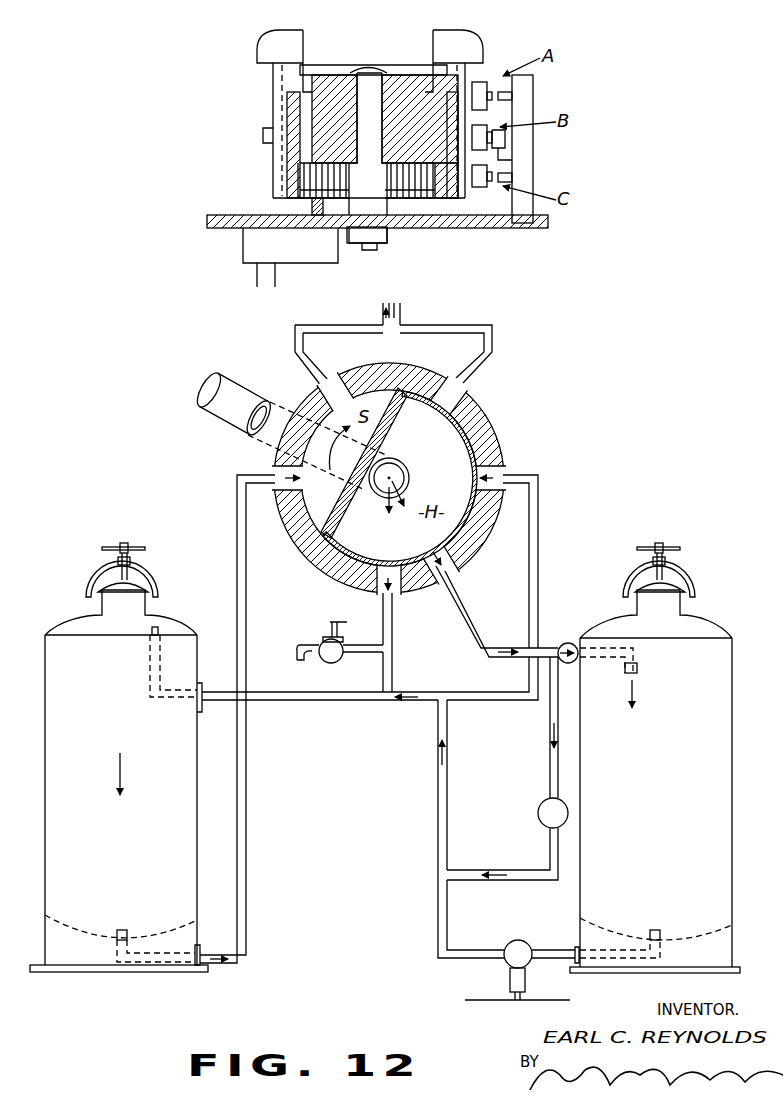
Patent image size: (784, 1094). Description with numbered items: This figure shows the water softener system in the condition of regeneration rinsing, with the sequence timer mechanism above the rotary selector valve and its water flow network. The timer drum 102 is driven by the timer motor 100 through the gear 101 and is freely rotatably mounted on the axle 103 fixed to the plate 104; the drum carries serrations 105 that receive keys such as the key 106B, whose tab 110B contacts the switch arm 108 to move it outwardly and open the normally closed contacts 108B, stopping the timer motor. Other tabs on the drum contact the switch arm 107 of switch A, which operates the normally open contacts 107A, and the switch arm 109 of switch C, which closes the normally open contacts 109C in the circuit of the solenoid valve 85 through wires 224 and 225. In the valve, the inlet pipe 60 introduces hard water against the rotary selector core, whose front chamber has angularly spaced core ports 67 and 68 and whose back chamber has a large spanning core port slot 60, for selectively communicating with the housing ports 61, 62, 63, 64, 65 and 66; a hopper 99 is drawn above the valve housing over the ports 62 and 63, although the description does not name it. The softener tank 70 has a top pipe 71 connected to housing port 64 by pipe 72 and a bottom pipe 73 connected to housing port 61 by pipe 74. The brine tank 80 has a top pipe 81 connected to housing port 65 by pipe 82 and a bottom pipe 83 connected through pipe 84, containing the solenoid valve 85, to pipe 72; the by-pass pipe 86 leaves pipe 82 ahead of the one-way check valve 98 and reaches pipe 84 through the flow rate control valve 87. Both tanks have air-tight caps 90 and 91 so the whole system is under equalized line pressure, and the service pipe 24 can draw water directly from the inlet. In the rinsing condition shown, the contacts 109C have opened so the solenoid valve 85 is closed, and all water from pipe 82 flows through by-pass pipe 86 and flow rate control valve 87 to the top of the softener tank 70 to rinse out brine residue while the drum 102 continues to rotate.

The service pipe 24 is at (388, 637).
The inlet pipe 60 is at (253, 395).
The housing port 61 is at (275, 470).
The housing port 62 is at (328, 384).
The housing port 63 is at (463, 388).
The housing port 64 is at (504, 478).
The housing port 65 is at (452, 578).
The housing port 66 is at (393, 592).
The core port 67 is at (465, 449).
The core port 68 is at (414, 562).
The softener tank 70 is at (45, 712).
The top pipe 71 is at (152, 661).
The pipe 72 is at (378, 697).
The bottom pipe 73 is at (117, 938).
The pipe 74 is at (243, 786).
The brine tank 80 is at (733, 746).
The top pipe 81 is at (638, 666).
The pipe 82 is at (481, 643).
The bottom pipe 83 is at (661, 951).
The pipe 84 is at (438, 800).
The solenoid valve 85 is at (516, 940).
The by-pass pipe 86 is at (549, 757).
The flow rate control valve 87 is at (538, 812).
The air-tight cap 90 is at (157, 587).
The air-tight cap 91 is at (692, 587).
The one-way check valve 98 is at (571, 643).
The funnel hopper 99 is at (353, 333).
The timer motor 100 is at (320, 250).
The gear 101 is at (318, 198).
The drum 102 is at (336, 72).
The axle 103 is at (374, 242).
The plate 104 is at (525, 216).
The serrations 105 is at (440, 70).
The key 106B is at (270, 56).
The switch arm 107 is at (483, 82).
The contacts 107A is at (514, 96).
The switch arm 108 is at (477, 138).
The contacts 108B is at (513, 139).
The switch arm 109 is at (486, 184).
The contacts 109C is at (514, 177).
The tab 110B is at (262, 130).
The wire 224 is at (557, 1000).
The wire 225 is at (488, 1000).